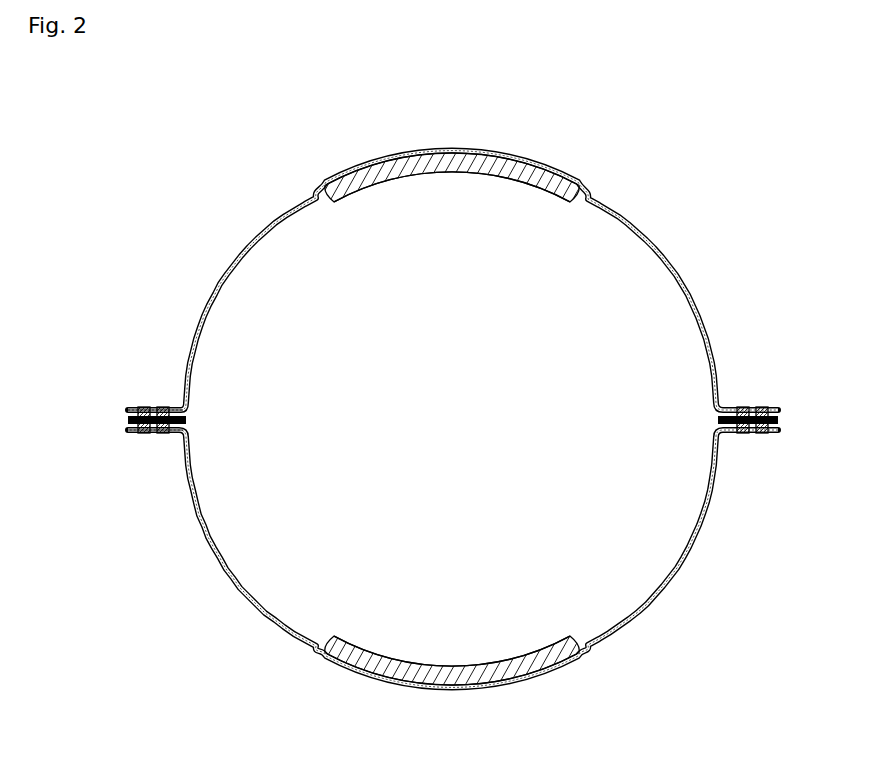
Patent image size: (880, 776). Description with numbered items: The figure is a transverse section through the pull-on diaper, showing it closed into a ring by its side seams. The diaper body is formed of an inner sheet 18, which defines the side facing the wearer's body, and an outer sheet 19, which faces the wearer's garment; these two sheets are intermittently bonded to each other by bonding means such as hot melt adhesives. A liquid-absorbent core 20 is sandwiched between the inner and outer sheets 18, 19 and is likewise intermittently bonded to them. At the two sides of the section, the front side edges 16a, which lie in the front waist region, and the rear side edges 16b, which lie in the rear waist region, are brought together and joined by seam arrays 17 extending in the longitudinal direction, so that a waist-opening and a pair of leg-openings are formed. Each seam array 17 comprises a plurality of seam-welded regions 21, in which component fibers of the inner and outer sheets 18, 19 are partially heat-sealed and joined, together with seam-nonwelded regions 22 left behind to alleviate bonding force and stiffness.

The front side edges 16a is at (159, 407).
The rear side edges 16b is at (159, 433).
The seam arrays 17 is at (127, 395).
The inner sheet 18 is at (432, 174).
The outer sheet 19 is at (457, 150).
The liquid-absorbent core 20 is at (507, 160).
The seam-welded regions 21 is at (761, 407).
The nut 22 is at (761, 433).